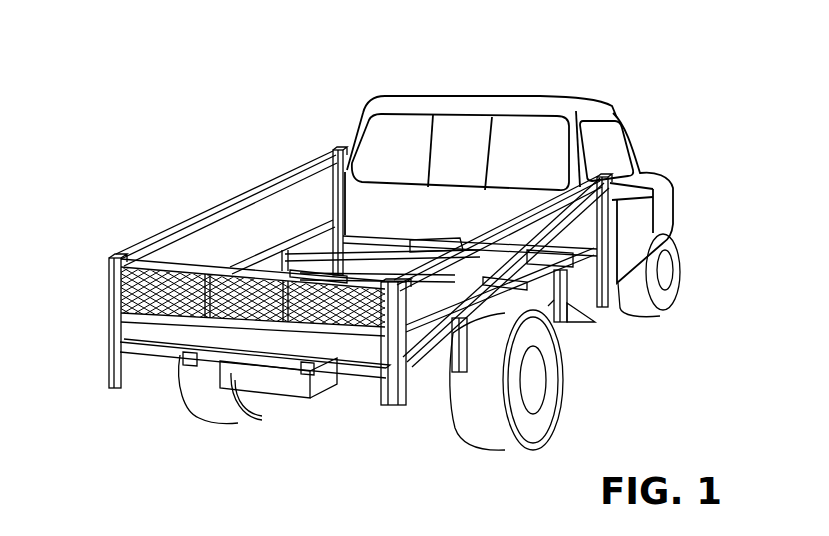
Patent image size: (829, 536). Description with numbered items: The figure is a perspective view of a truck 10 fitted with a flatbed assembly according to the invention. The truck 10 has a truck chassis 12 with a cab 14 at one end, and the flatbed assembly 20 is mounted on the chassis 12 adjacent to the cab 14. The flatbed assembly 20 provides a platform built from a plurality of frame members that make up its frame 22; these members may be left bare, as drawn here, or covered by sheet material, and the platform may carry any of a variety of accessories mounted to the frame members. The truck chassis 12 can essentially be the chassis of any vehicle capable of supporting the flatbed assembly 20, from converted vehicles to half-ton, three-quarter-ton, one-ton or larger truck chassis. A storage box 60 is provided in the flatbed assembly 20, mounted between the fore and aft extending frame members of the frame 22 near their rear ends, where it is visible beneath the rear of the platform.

The truck 10 is at (129, 79).
The truck chassis 12 is at (577, 317).
The cab 14 is at (410, 106).
The flatbed assembly 20 is at (180, 221).
The frame 22 is at (428, 350).
The storage box 60 is at (288, 380).